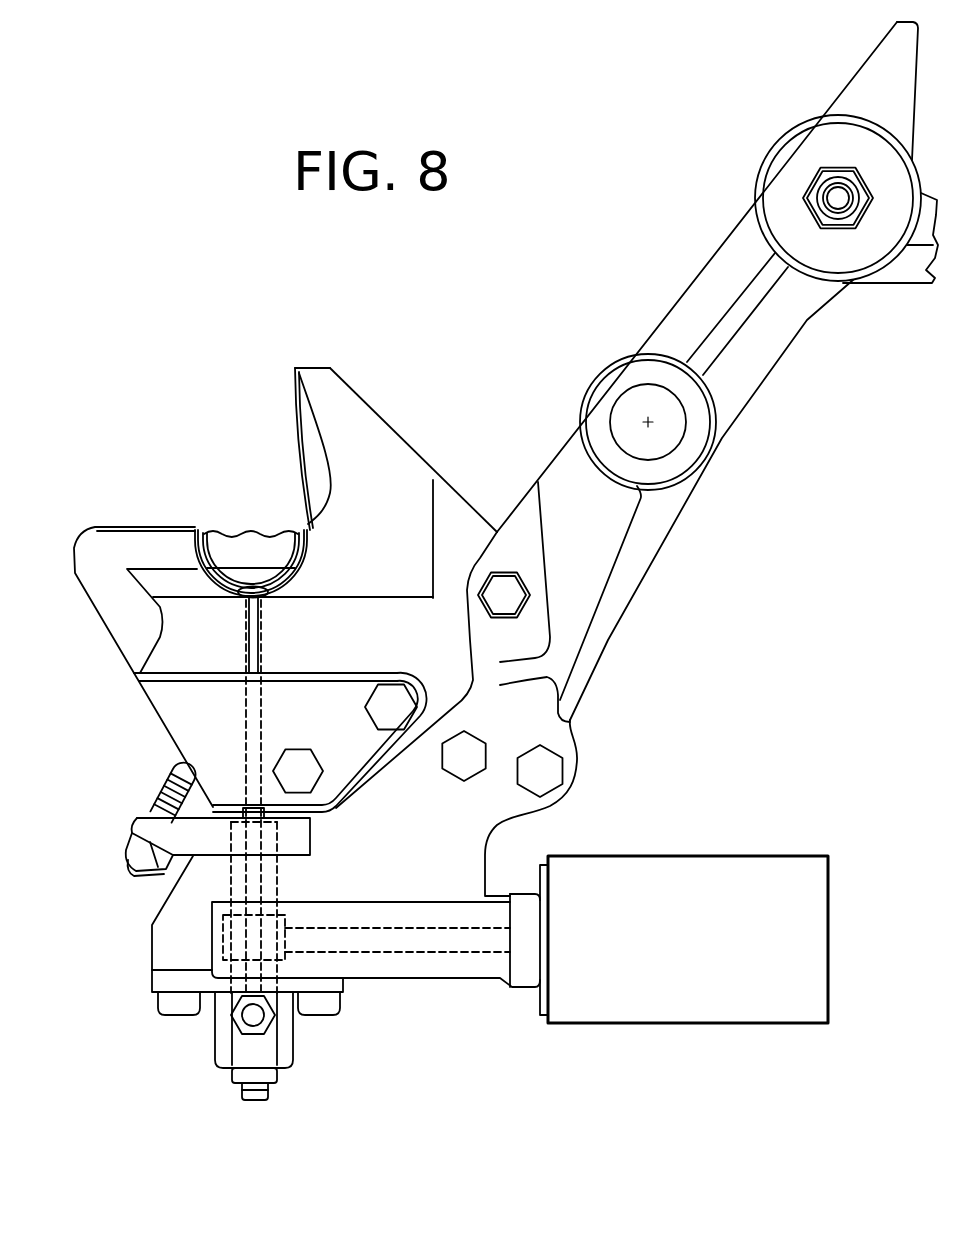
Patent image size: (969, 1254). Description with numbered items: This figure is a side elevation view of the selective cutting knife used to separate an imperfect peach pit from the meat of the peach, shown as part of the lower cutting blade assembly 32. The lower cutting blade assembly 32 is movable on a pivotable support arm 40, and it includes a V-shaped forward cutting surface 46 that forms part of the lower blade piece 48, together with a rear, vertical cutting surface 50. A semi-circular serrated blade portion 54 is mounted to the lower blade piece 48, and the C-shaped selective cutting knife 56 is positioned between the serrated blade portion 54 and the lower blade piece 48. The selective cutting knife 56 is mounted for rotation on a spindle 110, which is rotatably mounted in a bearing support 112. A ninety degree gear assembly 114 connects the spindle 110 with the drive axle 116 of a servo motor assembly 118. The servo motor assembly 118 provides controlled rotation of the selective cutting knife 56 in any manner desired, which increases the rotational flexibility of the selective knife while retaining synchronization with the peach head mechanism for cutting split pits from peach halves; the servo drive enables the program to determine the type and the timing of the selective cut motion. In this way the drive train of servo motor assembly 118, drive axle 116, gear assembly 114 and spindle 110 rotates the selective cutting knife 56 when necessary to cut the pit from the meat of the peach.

The lower cutting blade assembly 32 is at (148, 764).
The pivotable support arm 40 is at (602, 553).
The V-shaped forward cutting surface 46 is at (652, 426).
The lower blade piece 48 is at (315, 590).
The rear vertical cutting surface 50 is at (300, 453).
The semi-circular serrated blade portion 54 is at (247, 533).
The C-shaped selective cutting knife 56 is at (228, 590).
The spindle 110 is at (243, 722).
The bearing support 112 is at (230, 877).
The 90 degree gear assembly 114 is at (223, 932).
The drive axle 116 is at (387, 955).
The servo motor assembly 118 is at (684, 939).